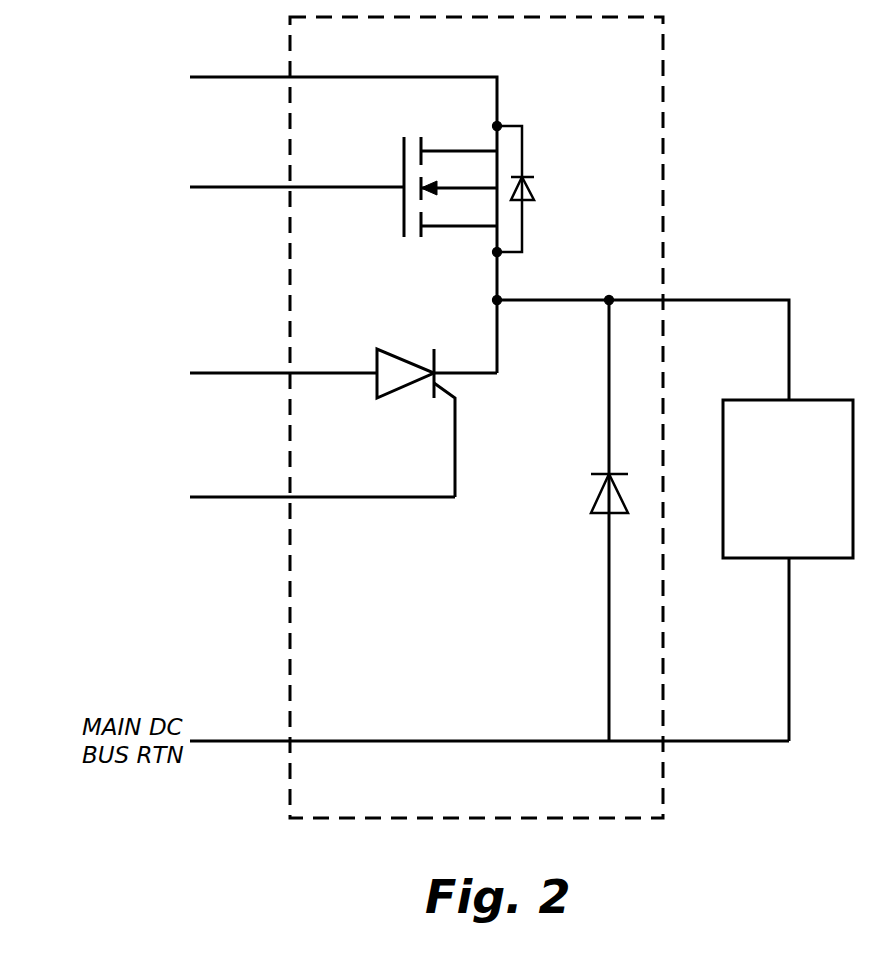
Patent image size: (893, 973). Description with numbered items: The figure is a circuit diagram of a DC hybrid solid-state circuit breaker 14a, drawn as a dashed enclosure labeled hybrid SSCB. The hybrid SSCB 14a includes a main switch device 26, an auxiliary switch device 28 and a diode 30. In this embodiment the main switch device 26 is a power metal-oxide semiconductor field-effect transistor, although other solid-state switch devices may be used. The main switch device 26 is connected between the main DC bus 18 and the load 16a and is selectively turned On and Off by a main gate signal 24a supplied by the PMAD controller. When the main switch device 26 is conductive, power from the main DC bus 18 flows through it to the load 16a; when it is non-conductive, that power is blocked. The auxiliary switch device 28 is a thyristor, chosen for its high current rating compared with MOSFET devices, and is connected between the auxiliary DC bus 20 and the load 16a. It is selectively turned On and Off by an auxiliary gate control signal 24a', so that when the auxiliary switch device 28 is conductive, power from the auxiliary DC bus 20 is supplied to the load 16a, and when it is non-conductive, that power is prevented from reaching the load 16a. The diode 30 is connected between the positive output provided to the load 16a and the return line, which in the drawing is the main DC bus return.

The DC hybrid solid-state circuit breaker 14a is at (665, 45).
The load 16a is at (750, 400).
The main DC bus 18 is at (265, 77).
The auxiliary DC bus 20 is at (265, 373).
The main gate signal 24a is at (227, 174).
The auxiliary gate control signal 24a' is at (234, 486).
The main switch device 26 is at (455, 151).
The auxiliary switch device 28 is at (410, 358).
The diode 30 is at (600, 493).